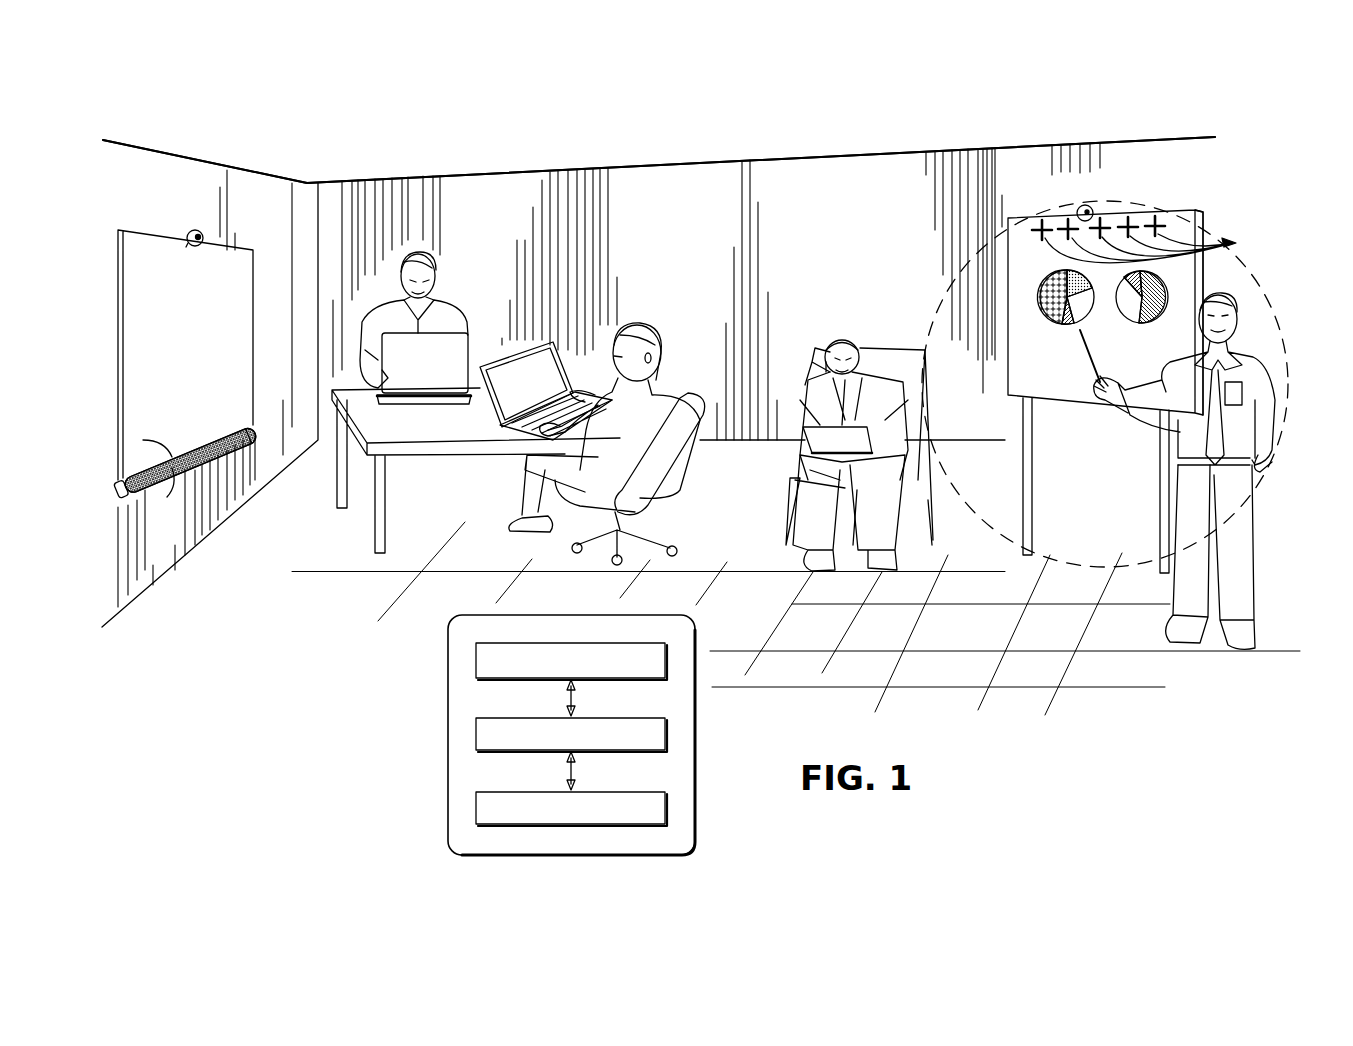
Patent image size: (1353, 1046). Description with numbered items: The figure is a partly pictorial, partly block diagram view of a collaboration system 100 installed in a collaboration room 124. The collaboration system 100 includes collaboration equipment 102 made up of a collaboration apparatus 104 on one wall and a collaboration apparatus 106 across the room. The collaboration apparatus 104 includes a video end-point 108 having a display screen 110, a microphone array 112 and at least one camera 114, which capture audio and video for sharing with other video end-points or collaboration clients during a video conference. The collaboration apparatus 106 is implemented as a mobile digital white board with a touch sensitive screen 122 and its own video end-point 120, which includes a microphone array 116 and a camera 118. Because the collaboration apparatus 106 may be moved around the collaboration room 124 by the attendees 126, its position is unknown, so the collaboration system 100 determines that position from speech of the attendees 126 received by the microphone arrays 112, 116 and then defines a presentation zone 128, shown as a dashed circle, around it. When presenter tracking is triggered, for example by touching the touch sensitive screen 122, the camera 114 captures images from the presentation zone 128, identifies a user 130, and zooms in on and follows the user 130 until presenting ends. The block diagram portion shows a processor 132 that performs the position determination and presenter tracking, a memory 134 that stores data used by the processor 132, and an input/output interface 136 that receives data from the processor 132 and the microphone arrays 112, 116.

The collaboration system 100 is at (465, 138).
The collaboration equipment 102 is at (244, 247).
The collaboration apparatus 104 is at (165, 231).
The collaboration apparatus 106 is at (1198, 208).
The video end-point 108 is at (190, 232).
The display screen 110 is at (170, 492).
The microphone array 112 is at (234, 426).
The camera 114 is at (193, 246).
The microphone array 116 is at (1158, 247).
The camera 118 is at (1092, 208).
The video end-point 120 is at (1022, 217).
The touch sensitive screen 122 is at (1035, 348).
The collaboration room 124 is at (673, 164).
The attendees 126 is at (430, 262).
The presentation zone 128 is at (948, 297).
The user 130 is at (1186, 338).
The processor 132 is at (476, 725).
The memory 134 is at (476, 799).
The input/output interface 136 is at (476, 652).